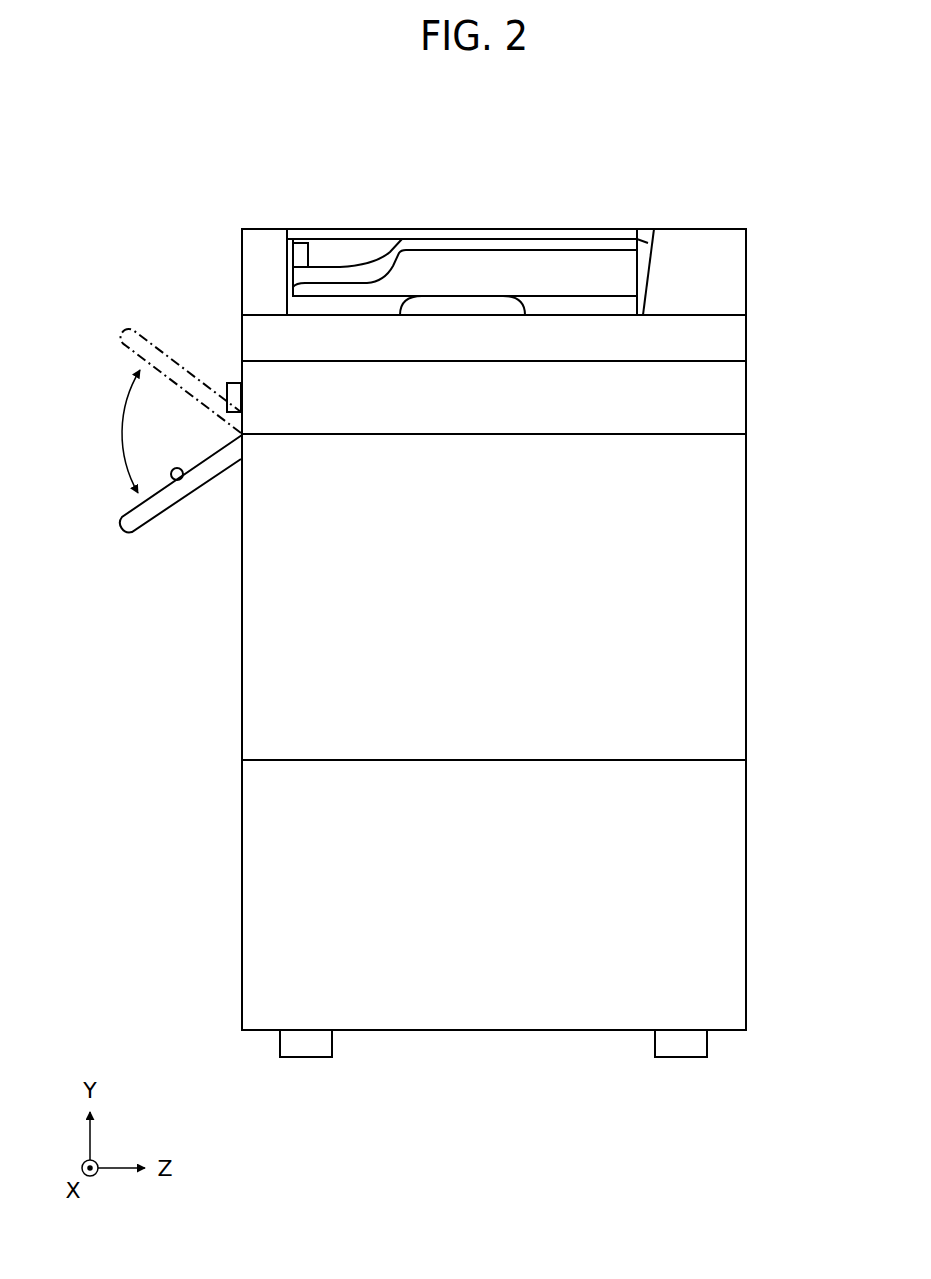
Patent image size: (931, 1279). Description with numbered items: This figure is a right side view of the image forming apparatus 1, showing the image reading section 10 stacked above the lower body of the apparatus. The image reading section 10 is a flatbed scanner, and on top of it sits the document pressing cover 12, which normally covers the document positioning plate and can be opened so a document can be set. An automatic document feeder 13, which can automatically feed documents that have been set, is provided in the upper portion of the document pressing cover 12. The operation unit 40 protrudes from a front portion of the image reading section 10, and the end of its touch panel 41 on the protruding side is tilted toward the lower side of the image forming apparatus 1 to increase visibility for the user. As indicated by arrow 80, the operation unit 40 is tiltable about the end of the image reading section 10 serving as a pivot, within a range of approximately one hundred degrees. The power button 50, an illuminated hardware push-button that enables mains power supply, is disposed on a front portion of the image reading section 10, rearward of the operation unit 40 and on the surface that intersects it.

The image forming apparatus 1 is at (792, 149).
The image reading section 10 is at (746, 399).
The document pressing cover 12 is at (746, 341).
The automatic document feeder 13 is at (746, 272).
The operation unit 40 is at (145, 512).
The touch panel 41 is at (180, 483).
The power button 50 is at (232, 383).
The arrow 80 is at (120, 428).